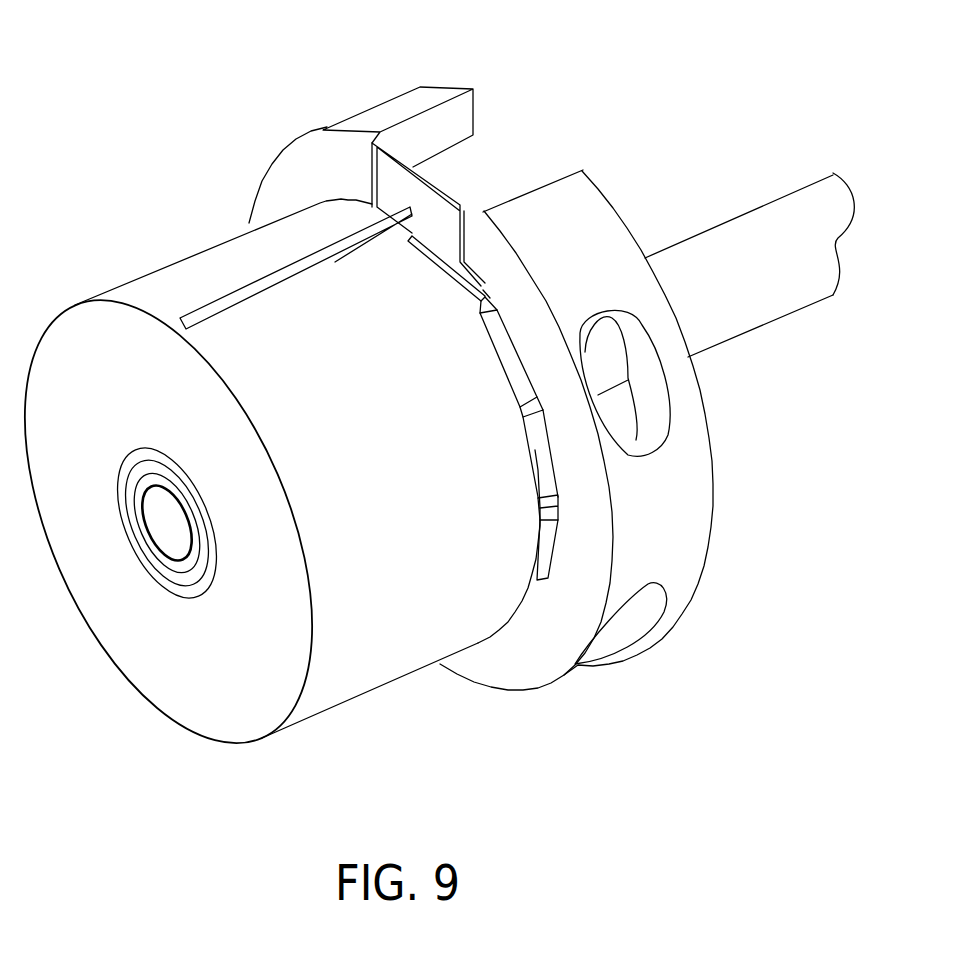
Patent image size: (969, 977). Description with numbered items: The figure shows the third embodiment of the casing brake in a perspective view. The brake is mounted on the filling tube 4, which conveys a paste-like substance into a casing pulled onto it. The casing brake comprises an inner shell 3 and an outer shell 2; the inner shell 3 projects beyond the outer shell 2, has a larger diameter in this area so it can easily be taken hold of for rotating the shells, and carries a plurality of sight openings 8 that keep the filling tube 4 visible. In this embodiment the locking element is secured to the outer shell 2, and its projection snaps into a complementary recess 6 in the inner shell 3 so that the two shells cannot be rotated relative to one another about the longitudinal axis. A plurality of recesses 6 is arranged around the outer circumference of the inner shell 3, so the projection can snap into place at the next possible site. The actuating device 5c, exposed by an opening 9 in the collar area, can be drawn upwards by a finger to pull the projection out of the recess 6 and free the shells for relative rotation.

The outer shell 2 is at (375, 665).
The inner shell 3 is at (697, 507).
The filling tube 4 is at (735, 215).
The actuating device 5c is at (395, 140).
The recess 6 is at (472, 312).
The sight opening 8 is at (622, 416).
The opening 9 is at (522, 168).